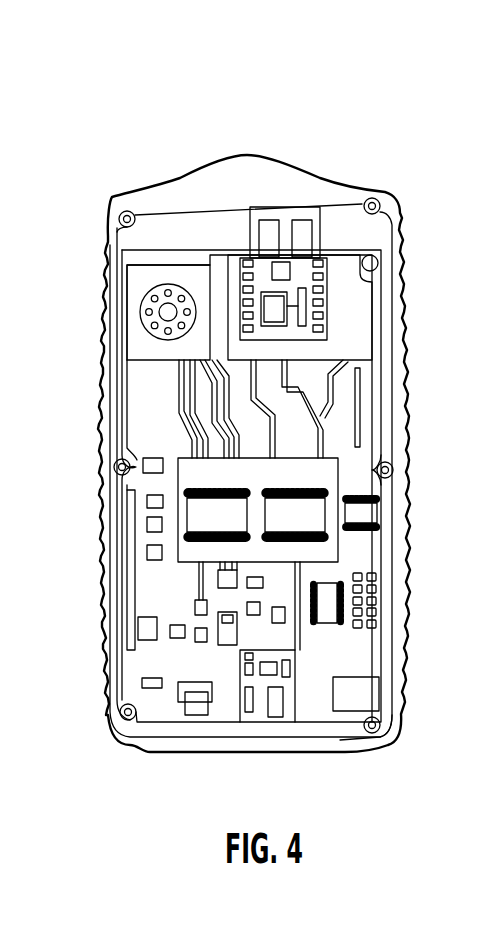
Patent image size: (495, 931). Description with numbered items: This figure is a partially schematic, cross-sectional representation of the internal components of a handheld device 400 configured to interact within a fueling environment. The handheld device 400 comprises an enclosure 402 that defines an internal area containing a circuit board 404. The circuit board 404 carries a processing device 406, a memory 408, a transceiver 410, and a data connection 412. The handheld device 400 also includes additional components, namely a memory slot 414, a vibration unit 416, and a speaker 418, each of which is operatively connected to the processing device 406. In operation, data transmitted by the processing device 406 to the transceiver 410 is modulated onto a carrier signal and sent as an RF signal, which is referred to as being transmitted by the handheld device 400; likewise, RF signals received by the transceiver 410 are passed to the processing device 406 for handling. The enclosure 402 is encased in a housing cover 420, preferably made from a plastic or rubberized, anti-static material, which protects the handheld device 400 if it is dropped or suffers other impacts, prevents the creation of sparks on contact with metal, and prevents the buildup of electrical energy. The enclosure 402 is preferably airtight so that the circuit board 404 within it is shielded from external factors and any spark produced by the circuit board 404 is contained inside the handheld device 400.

The handheld device 400 is at (209, 112).
The enclosure 402 is at (393, 587).
The circuit board 404 is at (380, 437).
The processing device 406 is at (180, 503).
The memory 408 is at (283, 515).
The transceiver 410 is at (291, 207).
The data connection 412 is at (197, 705).
The memory slot 414 is at (266, 703).
The vibration unit 416 is at (363, 690).
The speaker 418 is at (152, 292).
The housing cover 420 is at (393, 737).